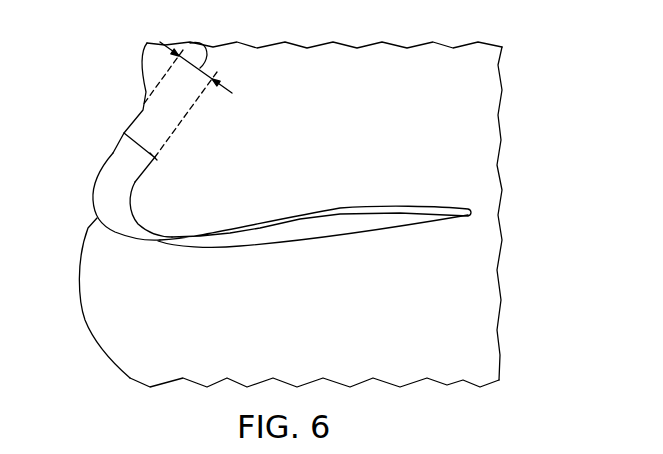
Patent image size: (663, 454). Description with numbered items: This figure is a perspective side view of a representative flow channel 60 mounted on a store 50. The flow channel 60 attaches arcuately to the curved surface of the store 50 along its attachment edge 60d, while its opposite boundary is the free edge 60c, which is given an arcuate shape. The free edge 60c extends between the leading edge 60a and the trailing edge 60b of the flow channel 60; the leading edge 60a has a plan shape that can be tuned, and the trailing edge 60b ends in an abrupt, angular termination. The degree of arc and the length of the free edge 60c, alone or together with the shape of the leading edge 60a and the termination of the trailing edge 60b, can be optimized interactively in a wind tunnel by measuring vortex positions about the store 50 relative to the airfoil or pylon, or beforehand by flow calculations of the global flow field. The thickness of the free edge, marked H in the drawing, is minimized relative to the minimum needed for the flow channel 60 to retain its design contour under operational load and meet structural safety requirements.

The store 50 is at (503, 141).
The flow channel 60 is at (282, 165).
The leading edge 60a is at (412, 222).
The trailing edge 60b is at (125, 134).
The free edge 60c is at (118, 234).
The attachment edge 60d is at (242, 244).
The hook thickness dimension H is at (203, 44).